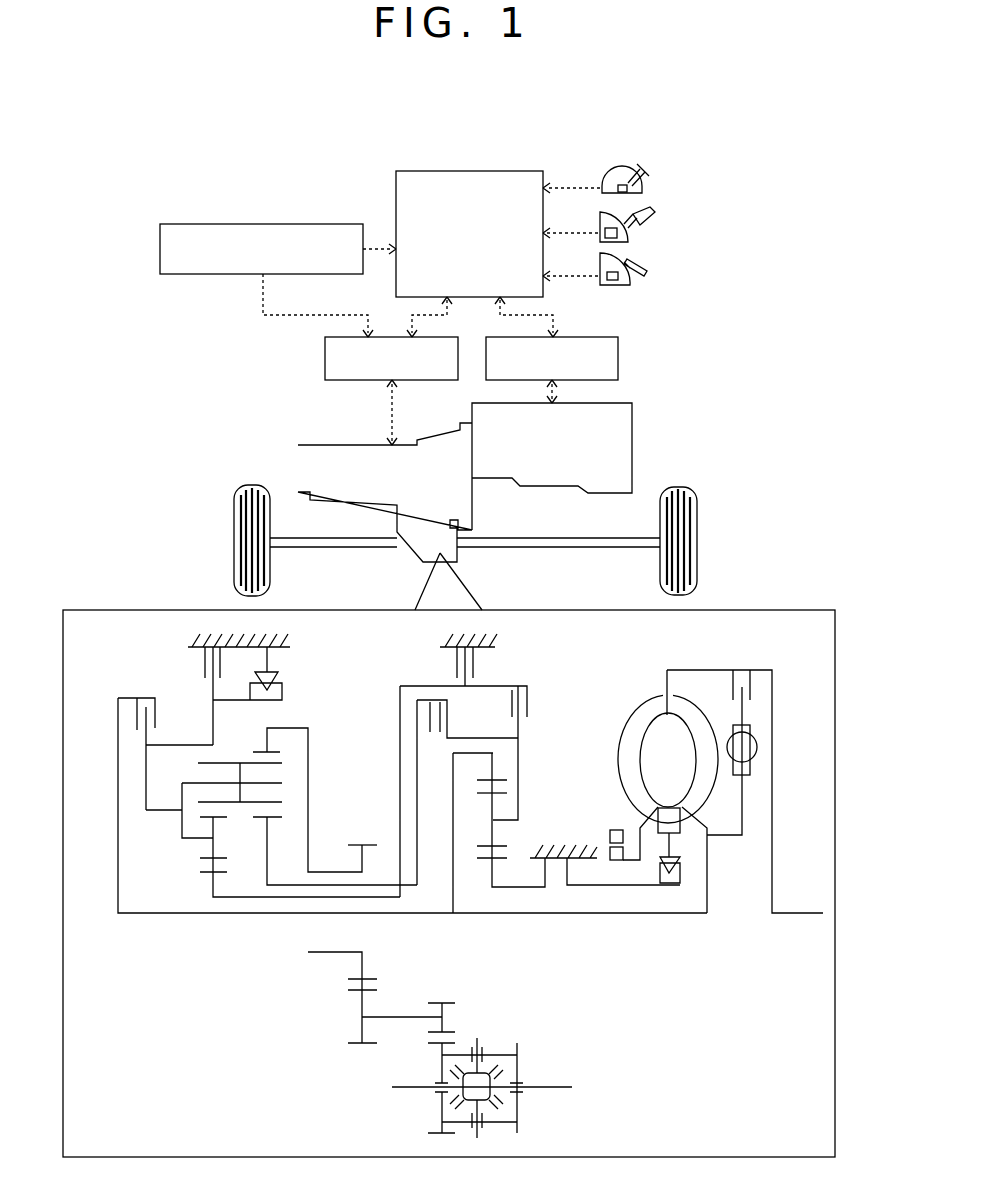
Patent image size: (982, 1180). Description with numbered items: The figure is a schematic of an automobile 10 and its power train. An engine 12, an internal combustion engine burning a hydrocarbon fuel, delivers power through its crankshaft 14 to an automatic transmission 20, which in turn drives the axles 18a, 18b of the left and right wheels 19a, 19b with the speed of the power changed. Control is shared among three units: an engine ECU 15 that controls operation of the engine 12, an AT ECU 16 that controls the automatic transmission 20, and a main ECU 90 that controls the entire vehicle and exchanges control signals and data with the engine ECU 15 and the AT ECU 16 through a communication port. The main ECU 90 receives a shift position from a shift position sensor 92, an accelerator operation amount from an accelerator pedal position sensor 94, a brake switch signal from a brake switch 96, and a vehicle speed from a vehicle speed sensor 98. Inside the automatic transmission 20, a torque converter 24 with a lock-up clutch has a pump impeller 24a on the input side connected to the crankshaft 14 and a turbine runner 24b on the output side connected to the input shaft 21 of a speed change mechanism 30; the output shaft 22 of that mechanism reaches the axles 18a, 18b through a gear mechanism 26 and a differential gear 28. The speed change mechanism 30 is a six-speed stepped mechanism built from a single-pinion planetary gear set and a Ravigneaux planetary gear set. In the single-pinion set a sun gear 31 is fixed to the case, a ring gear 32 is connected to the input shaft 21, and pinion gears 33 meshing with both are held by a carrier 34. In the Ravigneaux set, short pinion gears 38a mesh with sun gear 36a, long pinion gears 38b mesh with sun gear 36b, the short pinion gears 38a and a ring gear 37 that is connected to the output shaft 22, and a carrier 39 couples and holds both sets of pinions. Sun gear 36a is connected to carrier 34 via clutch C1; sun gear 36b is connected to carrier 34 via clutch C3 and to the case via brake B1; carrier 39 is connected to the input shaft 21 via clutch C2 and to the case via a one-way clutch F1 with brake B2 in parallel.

The automobile 10 is at (137, 170).
The engine 12 is at (632, 440).
The crankshaft 14 is at (783, 913).
The engine electronic control unit (engine ECU) 15 is at (596, 335).
The automatic transmission electronic control unit (AT ECU) 16 is at (325, 360).
The axle 18a is at (513, 538).
The axle 18b is at (310, 537).
The wheel 19a is at (697, 538).
The wheel 19b is at (234, 542).
The automatic transmission 20 is at (298, 460).
The input shaft 21 is at (670, 913).
The output shaft 22 is at (342, 872).
The torque converter 24 is at (695, 772).
The pump impeller 24a is at (623, 740).
The turbine runner 24b is at (693, 703).
The gear mechanism 26 is at (470, 1000).
The differential gear 28 is at (532, 1040).
The speed change mechanism 30 is at (262, 972).
The sun gear 31 is at (490, 863).
The ring gear 32 is at (497, 777).
The pinion gears 33 is at (498, 843).
The carrier 34 is at (508, 812).
The sun gear 36a is at (203, 873).
The sun gear 36b is at (260, 817).
The ring gear 37 is at (273, 747).
The short pinion gears 38a is at (213, 845).
The long pinion gears 38b is at (225, 763).
The carrier 39 is at (158, 807).
The main electronic control unit (main ECU) 90 is at (396, 200).
The shift position sensor 92 is at (643, 187).
The accelerator pedal position sensor 94 is at (640, 232).
The brake switch 96 is at (640, 276).
The vehicle speed sensor 98 is at (160, 249).
The brake B1 is at (473, 655).
The brake B2 is at (205, 655).
The clutch C1 is at (430, 717).
The clutch C2 is at (137, 705).
The clutch C3 is at (527, 700).
The one-way clutch F1 is at (275, 675).